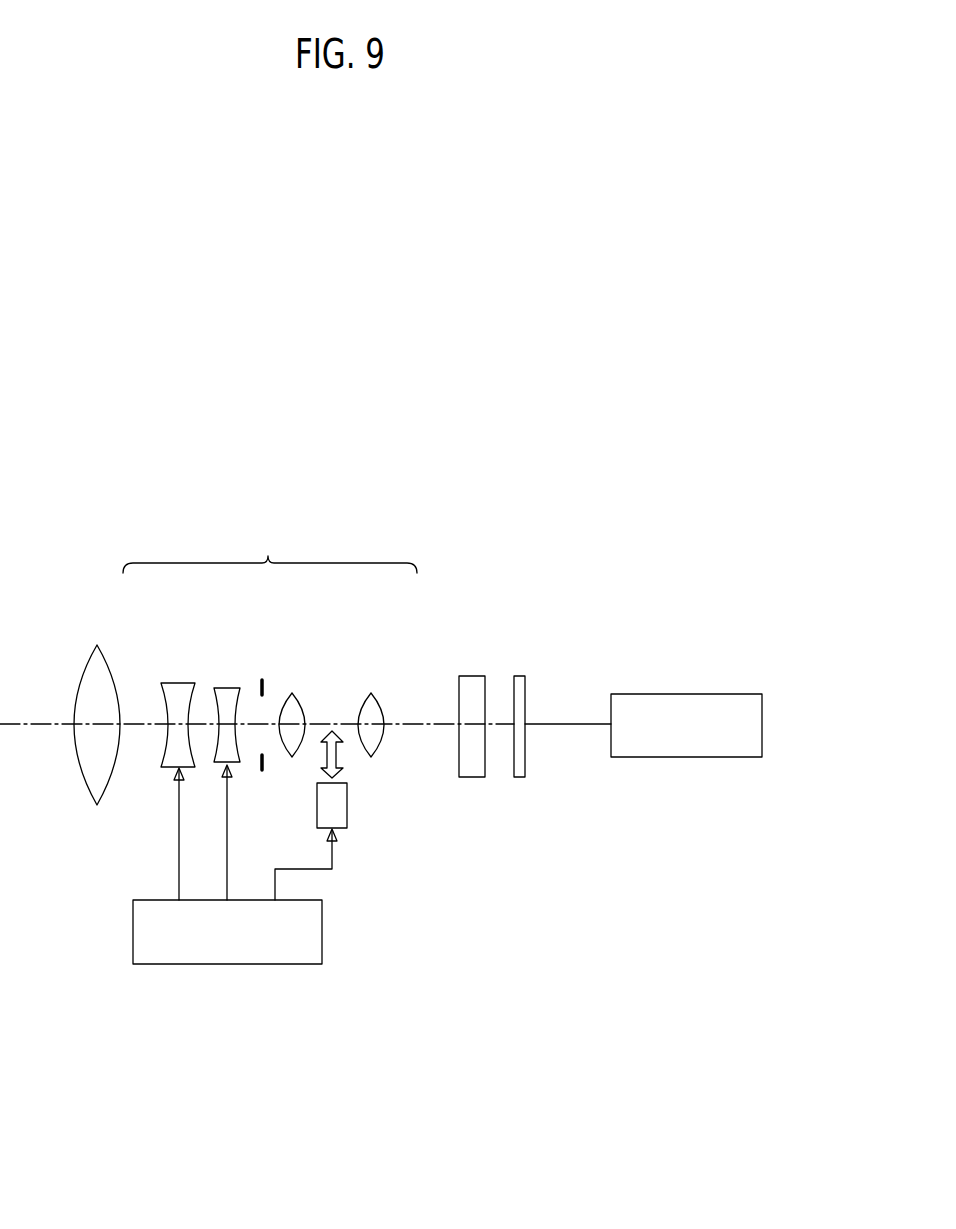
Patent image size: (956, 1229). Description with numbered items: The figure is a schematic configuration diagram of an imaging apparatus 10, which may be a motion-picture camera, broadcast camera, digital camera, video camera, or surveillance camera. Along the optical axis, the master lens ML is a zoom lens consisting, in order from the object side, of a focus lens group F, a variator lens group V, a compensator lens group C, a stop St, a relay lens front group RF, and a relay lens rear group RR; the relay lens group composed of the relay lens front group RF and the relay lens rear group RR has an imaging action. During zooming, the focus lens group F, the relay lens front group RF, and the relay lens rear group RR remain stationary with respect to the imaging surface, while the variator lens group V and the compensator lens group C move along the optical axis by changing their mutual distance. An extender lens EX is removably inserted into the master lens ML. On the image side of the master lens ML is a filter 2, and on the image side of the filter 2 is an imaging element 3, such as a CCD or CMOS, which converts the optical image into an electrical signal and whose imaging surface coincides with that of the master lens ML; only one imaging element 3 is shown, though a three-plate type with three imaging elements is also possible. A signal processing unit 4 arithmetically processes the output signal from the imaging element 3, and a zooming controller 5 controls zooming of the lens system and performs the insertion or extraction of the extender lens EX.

The imaging apparatus 10 is at (419, 504).
The master lens ML is at (270, 552).
The focus lens group F is at (112, 675).
The variator lens group V is at (195, 703).
The compensator lens group C is at (240, 690).
The stop St is at (262, 680).
The relay lens front group RF is at (305, 703).
The relay lens rear group RR is at (385, 705).
The extender lens EX is at (347, 810).
The filter 2 is at (474, 676).
The imaging element 3 is at (519, 676).
The signal processing unit 4 is at (742, 694).
The zooming controller 5 is at (300, 964).